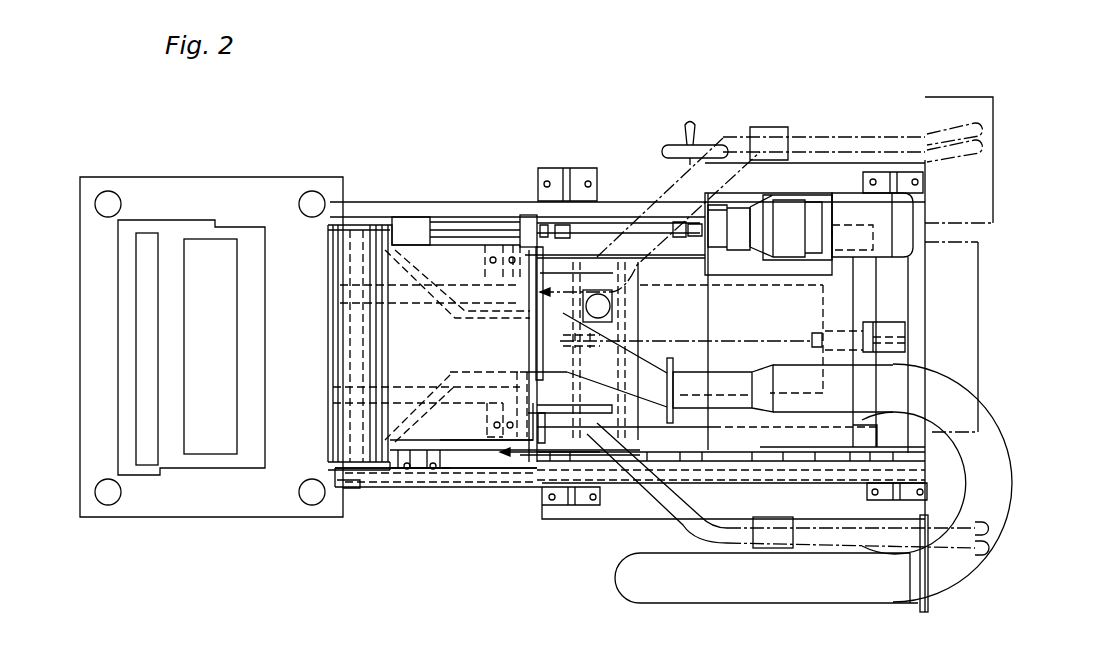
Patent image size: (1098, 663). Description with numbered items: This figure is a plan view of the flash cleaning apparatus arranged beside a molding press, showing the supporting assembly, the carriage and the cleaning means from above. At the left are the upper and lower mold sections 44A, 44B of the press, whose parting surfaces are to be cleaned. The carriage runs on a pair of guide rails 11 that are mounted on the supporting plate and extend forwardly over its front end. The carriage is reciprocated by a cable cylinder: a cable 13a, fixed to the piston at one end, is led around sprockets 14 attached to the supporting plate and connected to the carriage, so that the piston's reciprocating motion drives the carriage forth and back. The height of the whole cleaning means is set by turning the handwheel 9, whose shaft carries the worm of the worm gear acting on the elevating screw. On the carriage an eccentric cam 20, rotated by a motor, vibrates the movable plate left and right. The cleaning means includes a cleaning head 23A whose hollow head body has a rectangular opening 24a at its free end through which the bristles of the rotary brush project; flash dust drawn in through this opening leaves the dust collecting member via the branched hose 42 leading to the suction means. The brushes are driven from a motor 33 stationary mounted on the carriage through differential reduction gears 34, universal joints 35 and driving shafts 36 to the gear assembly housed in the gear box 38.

The handwheel 9 is at (673, 147).
The guide rails 11 is at (480, 483).
The cable 13a is at (753, 342).
The sprockets 14 is at (905, 340).
The eccentric cam 20 is at (608, 313).
The cleaning head 23A is at (463, 425).
The rectangular opening 24a is at (348, 230).
The motor 33 is at (852, 207).
The differential reduction gears 34 is at (790, 213).
The universal joints 35 is at (600, 222).
The driving shafts 36 is at (477, 222).
The gear box 38 is at (415, 213).
The branched hose 42 is at (1012, 472).
The upper mold section 44A is at (213, 507).
The lower mold section 44B is at (221, 401).